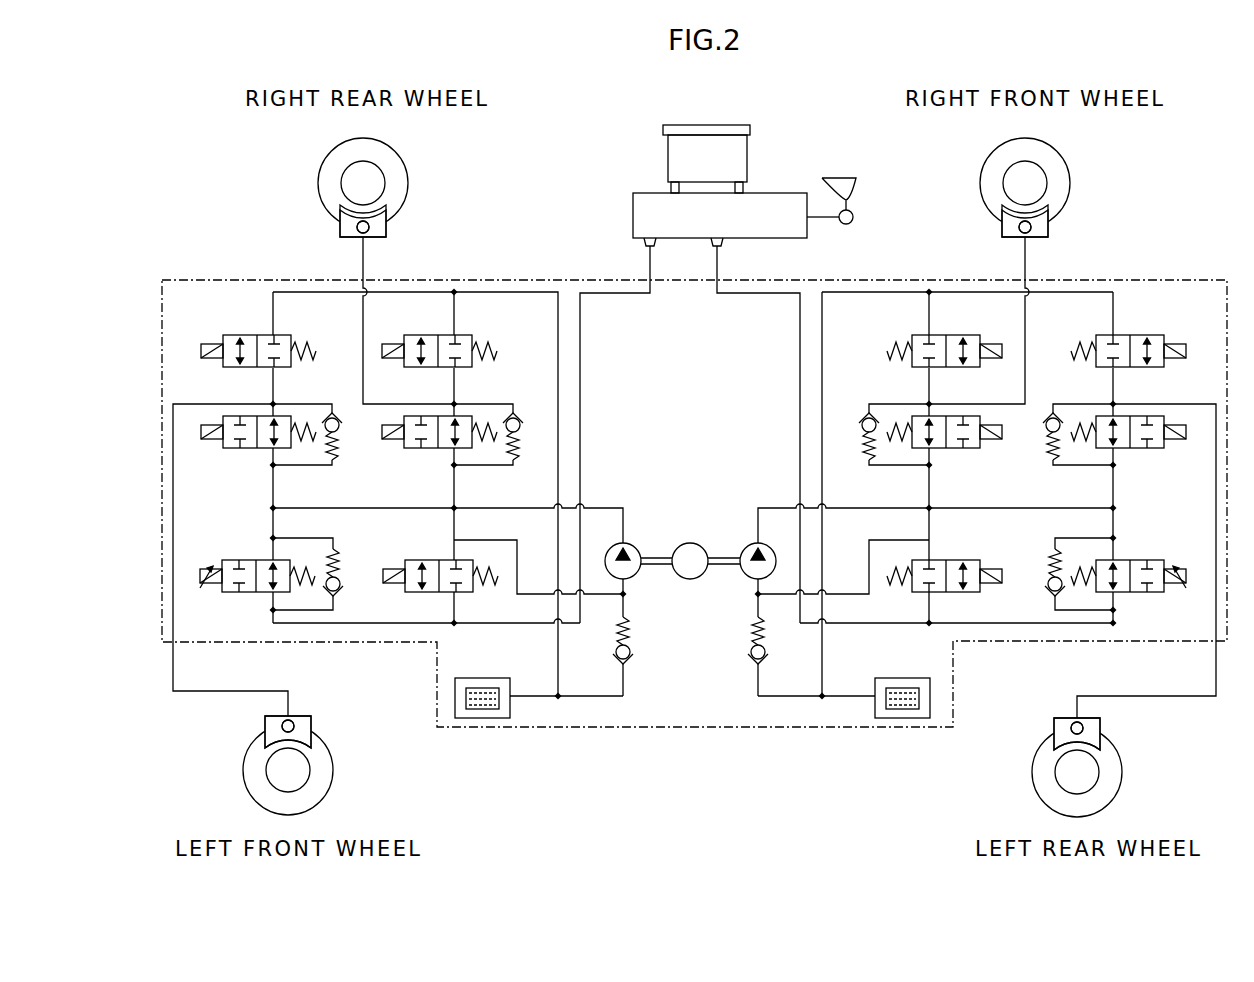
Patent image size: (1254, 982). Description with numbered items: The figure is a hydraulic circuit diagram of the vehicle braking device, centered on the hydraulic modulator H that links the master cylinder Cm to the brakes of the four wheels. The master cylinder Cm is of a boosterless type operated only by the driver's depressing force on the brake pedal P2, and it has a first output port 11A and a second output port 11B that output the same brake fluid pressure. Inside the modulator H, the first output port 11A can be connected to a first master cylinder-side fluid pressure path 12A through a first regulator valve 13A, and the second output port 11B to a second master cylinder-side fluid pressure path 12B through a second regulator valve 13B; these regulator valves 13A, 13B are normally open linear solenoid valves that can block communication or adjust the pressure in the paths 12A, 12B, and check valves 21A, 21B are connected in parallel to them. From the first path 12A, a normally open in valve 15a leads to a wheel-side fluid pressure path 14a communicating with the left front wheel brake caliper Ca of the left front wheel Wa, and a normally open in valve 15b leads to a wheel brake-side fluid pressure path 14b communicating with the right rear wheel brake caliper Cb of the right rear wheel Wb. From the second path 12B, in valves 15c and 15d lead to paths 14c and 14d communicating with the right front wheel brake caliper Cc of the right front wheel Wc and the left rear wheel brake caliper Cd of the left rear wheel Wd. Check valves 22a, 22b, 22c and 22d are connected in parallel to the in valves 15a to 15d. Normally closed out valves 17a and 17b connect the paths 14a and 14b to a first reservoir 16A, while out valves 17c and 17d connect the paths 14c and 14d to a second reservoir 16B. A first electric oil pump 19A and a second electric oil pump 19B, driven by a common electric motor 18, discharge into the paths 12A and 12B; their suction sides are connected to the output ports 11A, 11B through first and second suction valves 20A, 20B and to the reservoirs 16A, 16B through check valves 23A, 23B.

The hydraulic modulator H is at (1145, 280).
The master cylinder Cm is at (650, 186).
The brake pedal P2 is at (872, 246).
The first output port 11A is at (648, 244).
The second output port 11B is at (719, 244).
The first master cylinder-side fluid pressure path 12A is at (323, 508).
The second master cylinder-side fluid pressure path 12B is at (980, 508).
The first regulator valve 13A is at (250, 560).
The second regulator valve 13B is at (1130, 560).
The wheel-side fluid pressure path 14a is at (175, 668).
The wheel brake-side fluid pressure path 14b is at (365, 258).
The wheel brake-side fluid pressure path 14c is at (1023, 262).
The wheel brake-side fluid pressure path 14d is at (1216, 683).
The normally open in valve 15a is at (252, 448).
The normally open in valve 15b is at (433, 448).
The normally open in valve 15c is at (939, 448).
The normally open in valve 15d is at (1129, 448).
The first reservoir 16A is at (488, 678).
The second reservoir 16B is at (912, 678).
The normally closed out valve 17a is at (252, 335).
The normally closed out valve 17b is at (446, 335).
The normally closed out valve 17c is at (943, 335).
The normally closed out valve 17d is at (1126, 335).
The electric motor 18 is at (690, 543).
The first electric oil pump 19A is at (641, 545).
The second electric oil pump 19B is at (749, 545).
The first suction valve 20A is at (432, 560).
The second suction valve 20B is at (955, 560).
The check valve 21A is at (341, 591).
The check valve 21B is at (1049, 591).
The check valve 22a is at (337, 432).
The check valve 22b is at (518, 412).
The check valve 22c is at (864, 418).
The check valve 22d is at (1046, 431).
The check valve 23A is at (632, 646).
The check valve 23B is at (750, 646).
The left front wheel Wa is at (325, 785).
The right rear wheel Wb is at (398, 172).
The right front wheel Wc is at (1058, 172).
The left rear wheel Wd is at (1112, 788).
The left front wheel brake caliper Ca is at (305, 730).
The right rear wheel brake caliper Cb is at (348, 232).
The right front wheel brake caliper Cc is at (1040, 227).
The left rear wheel brake caliper Cd is at (1092, 735).